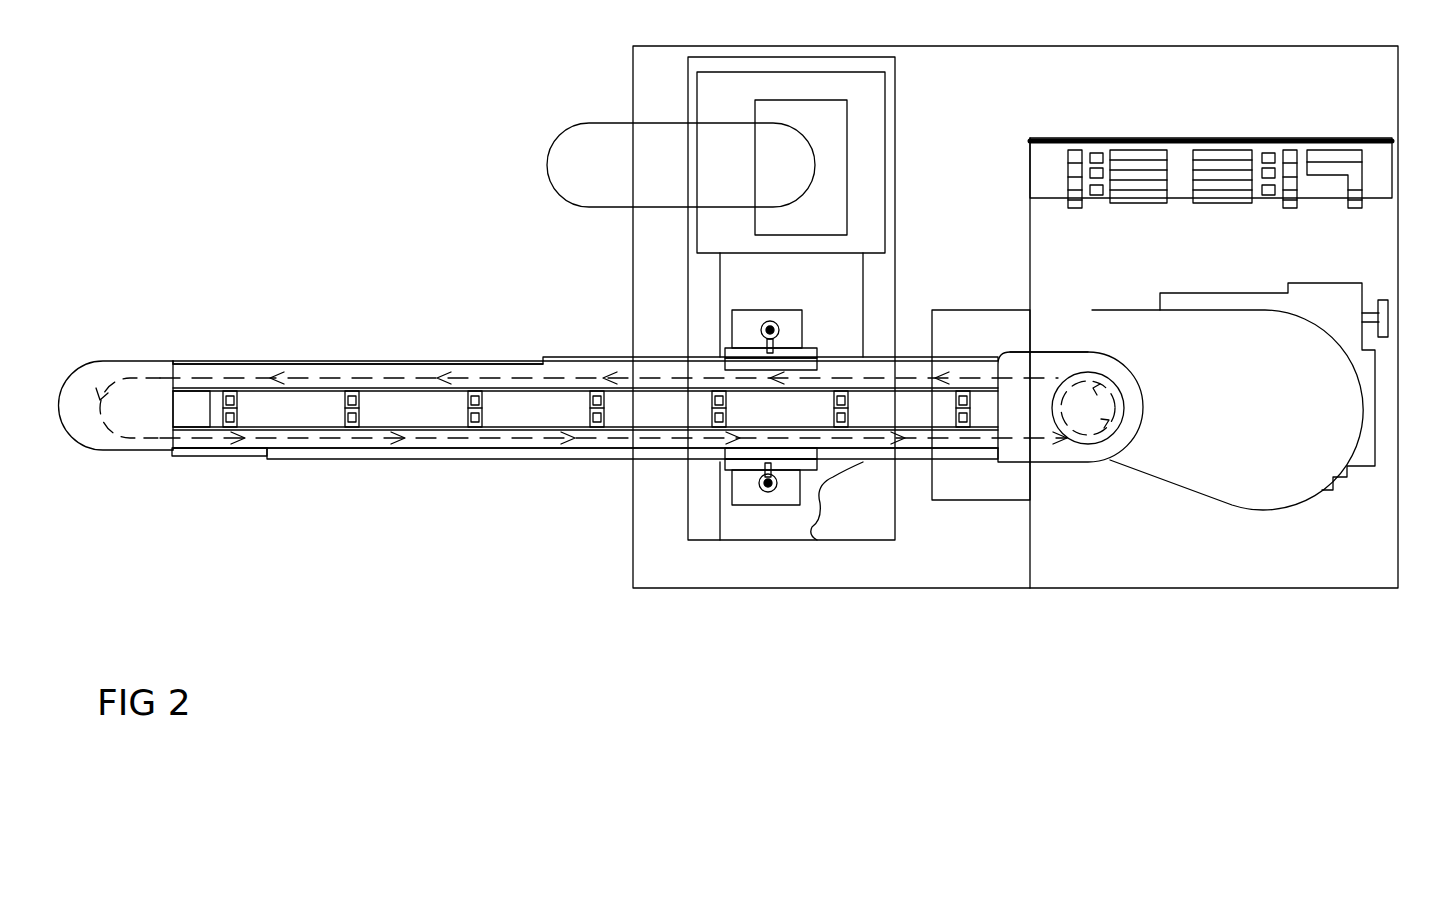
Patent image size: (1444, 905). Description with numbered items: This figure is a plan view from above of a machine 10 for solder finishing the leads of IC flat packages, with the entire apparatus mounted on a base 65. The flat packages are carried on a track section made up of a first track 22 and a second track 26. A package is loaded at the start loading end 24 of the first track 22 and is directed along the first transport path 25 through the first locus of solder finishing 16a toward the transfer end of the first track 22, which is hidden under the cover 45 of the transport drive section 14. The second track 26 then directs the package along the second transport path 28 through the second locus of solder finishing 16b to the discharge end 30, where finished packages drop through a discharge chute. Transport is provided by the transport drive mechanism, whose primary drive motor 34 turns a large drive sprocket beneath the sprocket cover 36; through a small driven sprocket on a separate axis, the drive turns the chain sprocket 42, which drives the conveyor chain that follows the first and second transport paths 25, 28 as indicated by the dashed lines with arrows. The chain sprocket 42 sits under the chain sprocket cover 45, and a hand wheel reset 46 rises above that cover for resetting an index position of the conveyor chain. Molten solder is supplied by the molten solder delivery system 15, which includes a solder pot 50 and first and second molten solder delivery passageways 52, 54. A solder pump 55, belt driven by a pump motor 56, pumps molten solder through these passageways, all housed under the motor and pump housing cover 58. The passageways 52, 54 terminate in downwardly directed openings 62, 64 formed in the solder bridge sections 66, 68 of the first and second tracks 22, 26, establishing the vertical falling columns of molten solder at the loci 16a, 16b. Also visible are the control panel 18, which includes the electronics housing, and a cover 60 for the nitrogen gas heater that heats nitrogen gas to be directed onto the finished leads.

The machine 10 is at (378, 212).
The transport drive section 14 is at (1052, 346).
The molten solder delivery system 15 is at (873, 282).
The first locus of solder finishing 16a is at (773, 507).
The second locus of solder finishing 16b is at (757, 324).
The control panel 18 is at (1355, 138).
The first track 22 is at (237, 457).
The start loading end 24 is at (168, 446).
The first transport path 25 is at (388, 442).
The second track 26 is at (403, 360).
The second transport path 28 is at (282, 378).
The discharge end 30 is at (168, 374).
The primary drive motor 34 is at (1245, 292).
The sprocket cover 36 is at (1288, 416).
The chain sprocket 42 is at (1114, 405).
The chain sprocket cover 45 is at (1083, 464).
The hand wheel reset 46 is at (1105, 384).
The solder pot 50 is at (843, 78).
The first molten solder delivery passageway 52 is at (779, 483).
The second molten solder delivery passageway 54 is at (776, 325).
The solder pump 55 is at (773, 181).
The pump motor 56 is at (608, 181).
The motor and pump housing cover 58 is at (597, 122).
The cover for the nitrogen gas heater 60 is at (975, 501).
The downwardly directed opening 62 is at (762, 470).
The downwardly directed opening 64 is at (795, 352).
The base 65 is at (920, 589).
The solder bridge section 66 is at (724, 466).
The solder bridge section 68 is at (730, 354).